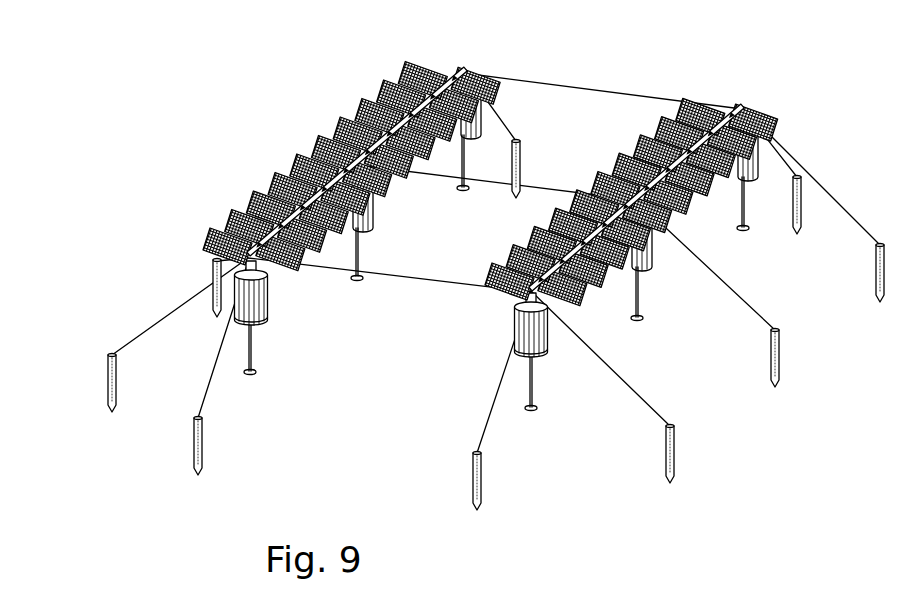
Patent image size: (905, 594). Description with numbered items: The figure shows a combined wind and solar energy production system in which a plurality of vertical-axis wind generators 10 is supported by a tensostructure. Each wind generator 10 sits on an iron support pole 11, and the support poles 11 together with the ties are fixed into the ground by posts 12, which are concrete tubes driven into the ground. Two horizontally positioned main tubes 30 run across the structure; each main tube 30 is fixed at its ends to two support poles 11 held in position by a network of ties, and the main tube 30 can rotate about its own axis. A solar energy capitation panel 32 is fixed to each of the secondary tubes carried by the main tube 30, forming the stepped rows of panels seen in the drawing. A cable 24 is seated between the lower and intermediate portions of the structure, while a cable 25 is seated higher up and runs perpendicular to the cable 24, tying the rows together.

The wind generator 10 is at (277, 309).
The support pole 11 is at (530, 384).
The post 12 is at (674, 463).
The cable 24 is at (541, 298).
The cable 25 is at (435, 284).
The main tube 30 is at (710, 110).
The solar energy capitation panel 32 is at (297, 165).